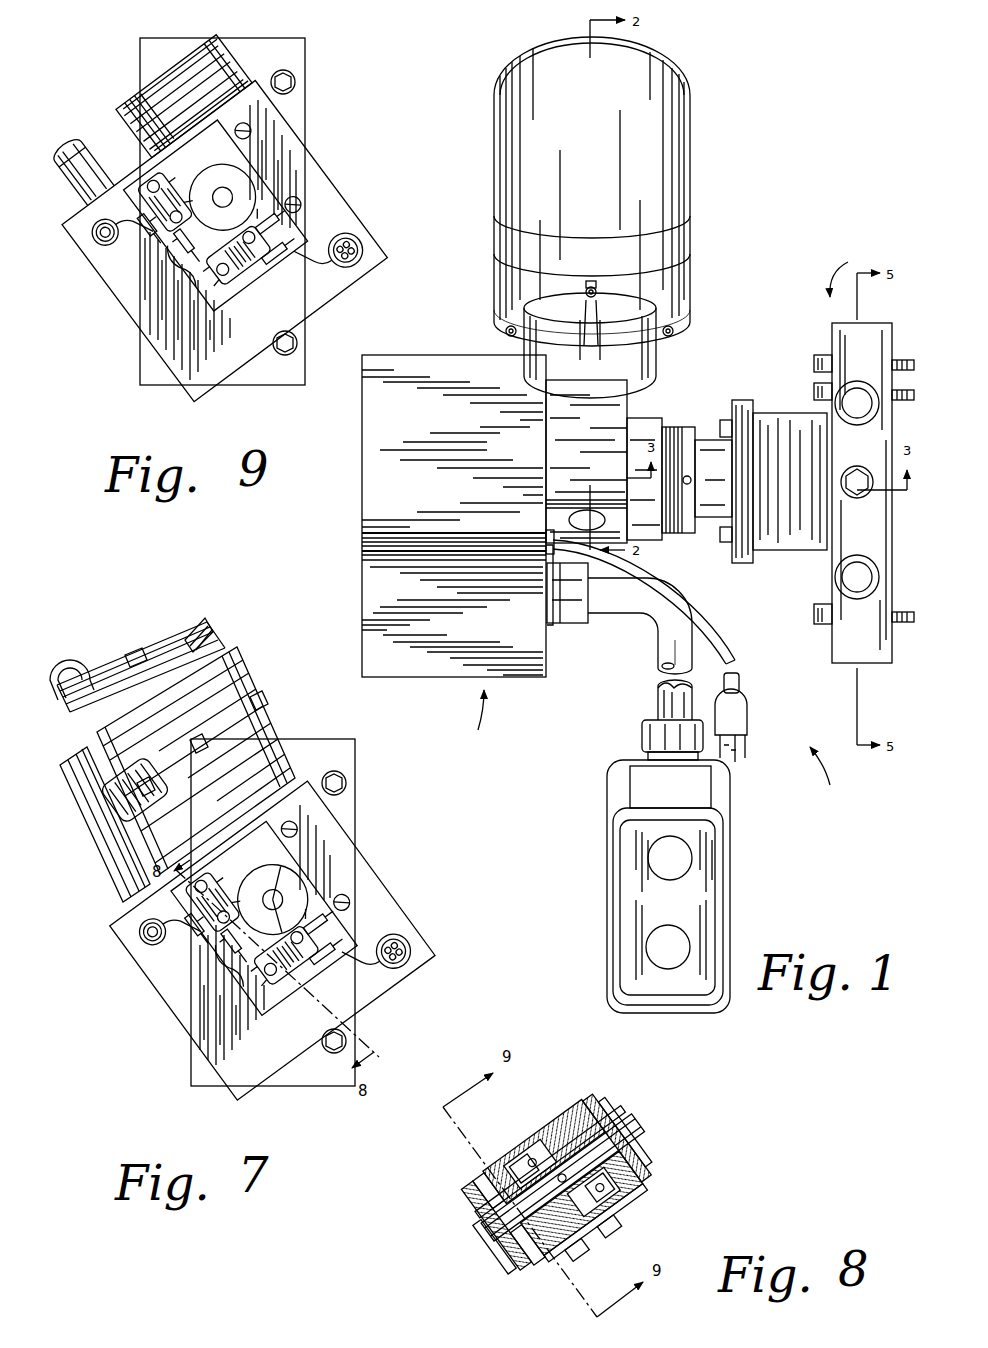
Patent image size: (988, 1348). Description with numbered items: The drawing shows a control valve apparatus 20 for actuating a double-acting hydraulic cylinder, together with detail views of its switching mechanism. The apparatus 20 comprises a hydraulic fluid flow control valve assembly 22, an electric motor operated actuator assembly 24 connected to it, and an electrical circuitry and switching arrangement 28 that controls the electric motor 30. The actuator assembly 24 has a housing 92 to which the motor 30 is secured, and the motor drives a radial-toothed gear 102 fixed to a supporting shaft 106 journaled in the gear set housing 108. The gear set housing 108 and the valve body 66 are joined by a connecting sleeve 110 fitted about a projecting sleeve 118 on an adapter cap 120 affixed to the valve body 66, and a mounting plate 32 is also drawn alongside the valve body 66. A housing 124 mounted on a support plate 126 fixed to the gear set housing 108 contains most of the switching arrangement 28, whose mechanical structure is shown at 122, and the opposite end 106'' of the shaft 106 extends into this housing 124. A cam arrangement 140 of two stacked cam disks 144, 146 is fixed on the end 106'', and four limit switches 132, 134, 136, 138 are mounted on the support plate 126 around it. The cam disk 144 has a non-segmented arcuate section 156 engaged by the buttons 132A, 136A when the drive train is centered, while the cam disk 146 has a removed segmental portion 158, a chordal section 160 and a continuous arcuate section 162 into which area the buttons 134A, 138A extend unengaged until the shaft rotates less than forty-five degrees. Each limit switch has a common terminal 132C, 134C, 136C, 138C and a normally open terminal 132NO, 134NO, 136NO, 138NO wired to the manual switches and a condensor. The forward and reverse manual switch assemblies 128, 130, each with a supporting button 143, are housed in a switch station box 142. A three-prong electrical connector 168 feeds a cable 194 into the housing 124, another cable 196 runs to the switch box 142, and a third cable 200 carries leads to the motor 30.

In FIG. 1, the control valve apparatus 20 is at (832, 774).
In FIG. 1, the hydraulic fluid flow control valve assembly 22 is at (842, 271).
In FIG. 1, the electric motor operated actuator assembly 24 is at (710, 264).
In FIG. 1, the electrical circuitry and switching arrangement 28 is at (478, 719).
In FIG. 1, the electric motor 30 is at (590, 104).
In FIG. 7, the electric motor 30 is at (234, 646).
In FIG. 1, the mounting plate 32 is at (868, 656).
In FIG. 9, the mounting plate 32 is at (304, 64).
In FIG. 7, the mounting plate 32 is at (324, 738).
In FIG. 1, the valve body 66 is at (808, 544).
In FIG. 1, the housing 92 is at (656, 360).
In FIG. 9, the housing 92 is at (184, 96).
In FIG. 7, the housing 92 is at (248, 733).
In FIG. 8, the radial-toothed gear 102 is at (582, 1203).
In FIG. 8, the supporting shaft 106 is at (562, 1177).
In FIG. 9, the opposite end of supporting shaft 106'' is at (216, 215).
In FIG. 7, the opposite end of supporting shaft 106'' is at (264, 918).
In FIG. 8, the opposite end of supporting shaft 106'' is at (550, 1162).
In FIG. 1, the gear set housing 108 is at (592, 474).
In FIG. 8, the gear set housing 108 is at (544, 1151).
In FIG. 1, the connecting sleeve 110 is at (669, 426).
In FIG. 1, the projecting sleeve 118 is at (700, 540).
In FIG. 1, the adapter cap 120 is at (733, 400).
In FIG. 7, the mechanical structure of electrical circuitry and switching arrangement 122 is at (379, 953).
In FIG. 1, the housing 124 is at (419, 420).
In FIG. 9, the support plate 126 is at (224, 240).
In FIG. 7, the support plate 126 is at (272, 940).
In FIG. 8, the support plate 126 is at (595, 1223).
In FIG. 1, the forward manual switch assembly 128 is at (692, 846).
In FIG. 1, the reverse manual switch assembly 130 is at (685, 930).
In FIG. 7, the limit switch 132 is at (212, 902).
In FIG. 8, the limit switch 132 is at (494, 1247).
In FIG. 7, the actuating button 132A is at (229, 892).
In FIG. 7, the common terminal 132C is at (201, 927).
In FIG. 7, the normally open terminal 132NO is at (233, 948).
In FIG. 9, the limit switch 134 is at (165, 202).
In FIG. 8, the limit switch 134 is at (496, 1225).
In FIG. 9, the actuating button 134A is at (181, 191).
In FIG. 9, the common terminal 134C is at (153, 227).
In FIG. 9, the normally open terminal 134NO is at (186, 248).
In FIG. 7, the limit switch 136 is at (286, 955).
In FIG. 8, the limit switch 136 is at (577, 1249).
In FIG. 7, the actuating button 136A is at (259, 976).
In FIG. 7, the common terminal 136C is at (326, 950).
In FIG. 7, the normally open terminal 136NO is at (315, 916).
In FIG. 9, the limit switch 138 is at (238, 255).
In FIG. 8, the limit switch 138 is at (609, 1226).
In FIG. 9, the actuating button 138A is at (211, 276).
In FIG. 9, the common terminal 138C is at (279, 249).
In FIG. 9, the normally open terminal 138NO is at (267, 215).
In FIG. 7, the cam arrangement 140 is at (229, 966).
In FIG. 1, the switch station box 142 is at (728, 790).
In FIG. 1, the supporting button 143 is at (648, 854).
In FIG. 7, the cam disk 144 is at (281, 899).
In FIG. 8, the cam disk 144 is at (527, 1245).
In FIG. 9, the cam disk 146 is at (222, 197).
In FIG. 7, the cam disk 146 is at (273, 900).
In FIG. 8, the cam disk 146 is at (488, 1191).
In FIG. 7, the non-segmented arcuate section 156 is at (167, 930).
In FIG. 9, the removed segmental portion 158 is at (120, 231).
In FIG. 9, the chordal section 160 is at (223, 197).
In FIG. 7, the chordal section 160 is at (273, 900).
In FIG. 9, the continuous arcuate section 162 is at (331, 252).
In FIG. 1, the electrical connector 168 is at (748, 706).
In FIG. 1, the cable 194 is at (730, 634).
In FIG. 1, the cable 196 is at (662, 642).
In FIG. 9, the cable 200 is at (82, 170).
In FIG. 7, the cable 200 is at (98, 848).